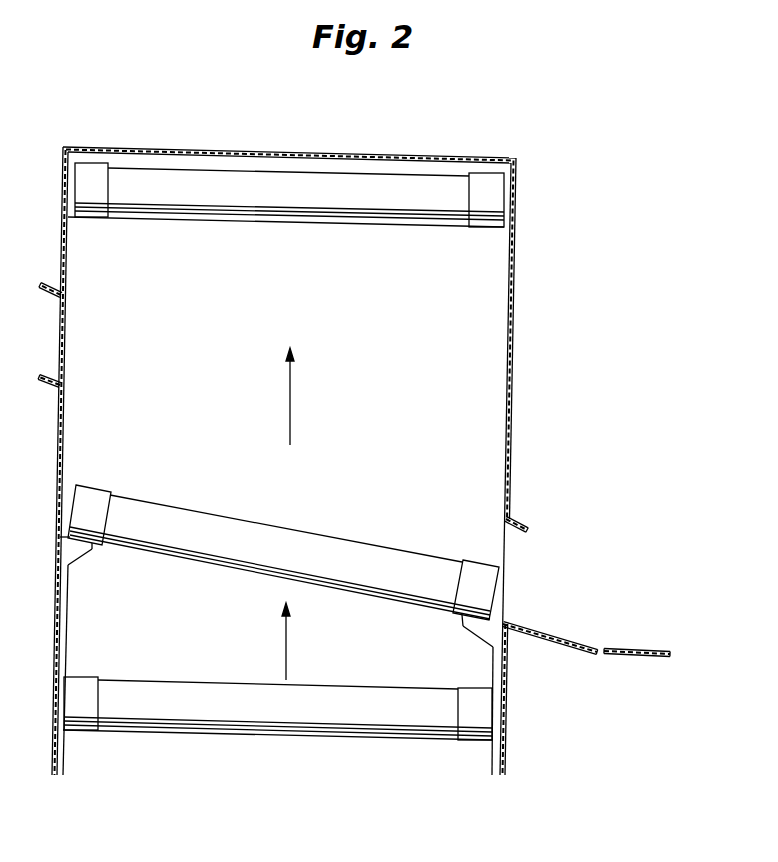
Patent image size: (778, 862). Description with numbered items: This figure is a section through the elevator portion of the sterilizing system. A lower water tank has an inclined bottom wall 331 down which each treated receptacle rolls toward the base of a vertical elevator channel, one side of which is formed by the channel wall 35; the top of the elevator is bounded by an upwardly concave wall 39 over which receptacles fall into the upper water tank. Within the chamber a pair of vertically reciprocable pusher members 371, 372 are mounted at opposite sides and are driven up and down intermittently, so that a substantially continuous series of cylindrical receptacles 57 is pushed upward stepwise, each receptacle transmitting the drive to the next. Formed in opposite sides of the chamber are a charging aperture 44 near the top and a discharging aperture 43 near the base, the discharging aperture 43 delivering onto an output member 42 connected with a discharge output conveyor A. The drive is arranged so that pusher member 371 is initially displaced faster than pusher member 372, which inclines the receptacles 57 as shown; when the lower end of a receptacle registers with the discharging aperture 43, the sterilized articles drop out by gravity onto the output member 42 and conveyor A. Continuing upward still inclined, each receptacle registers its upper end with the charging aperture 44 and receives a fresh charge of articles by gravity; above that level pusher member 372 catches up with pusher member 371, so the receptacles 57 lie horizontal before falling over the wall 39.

The channel wall 35 is at (516, 283).
The upwardly concave wall 39 is at (164, 218).
The cylindrical receptacle 57 is at (237, 180).
The charging aperture 44 is at (55, 325).
The discharging aperture 43 is at (512, 552).
The output member 42 is at (557, 643).
The discharge output conveyor A is at (630, 660).
The inclined bottom wall 331 is at (315, 738).
The pusher member 371 is at (70, 548).
The pusher member 372 is at (478, 627).